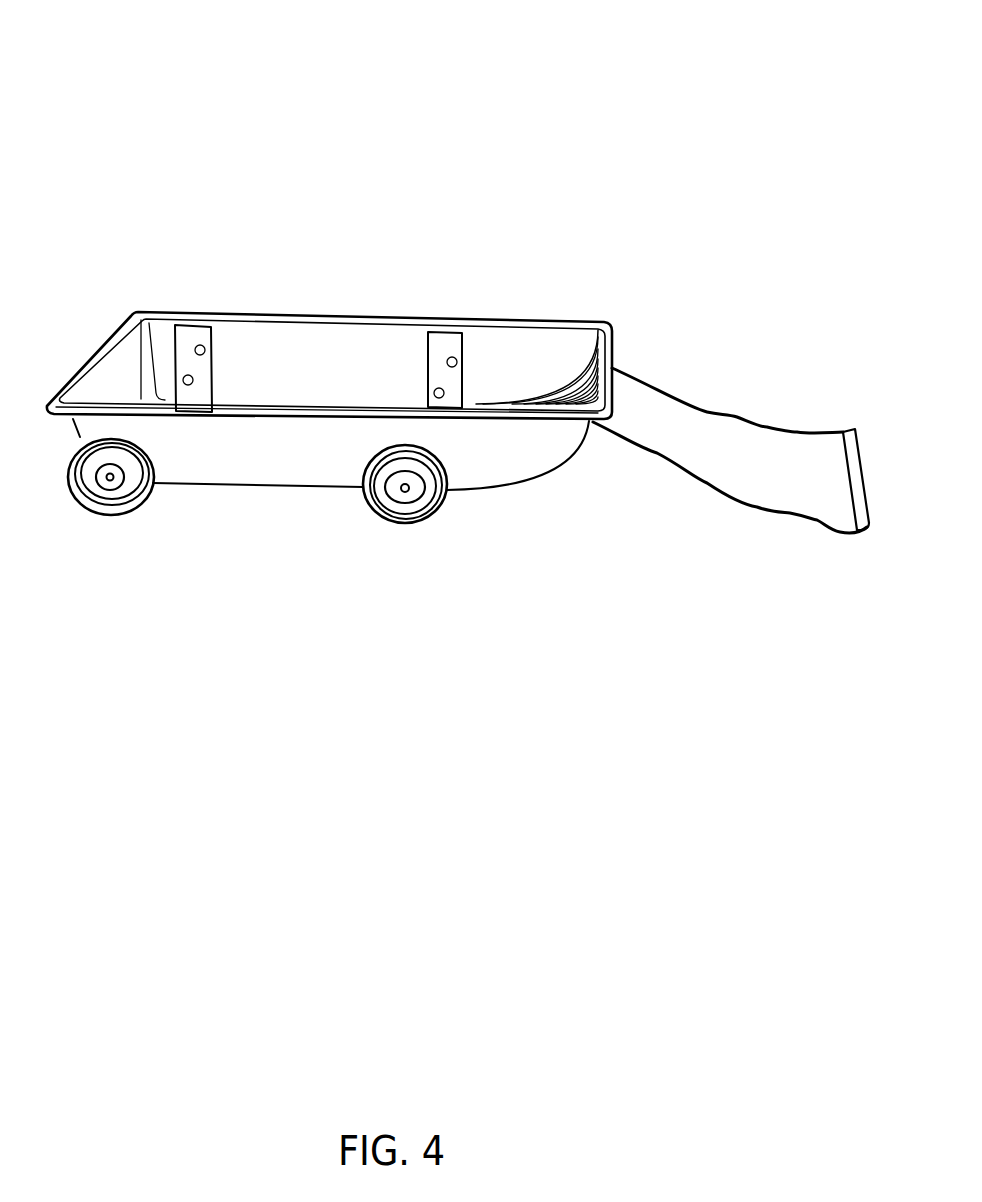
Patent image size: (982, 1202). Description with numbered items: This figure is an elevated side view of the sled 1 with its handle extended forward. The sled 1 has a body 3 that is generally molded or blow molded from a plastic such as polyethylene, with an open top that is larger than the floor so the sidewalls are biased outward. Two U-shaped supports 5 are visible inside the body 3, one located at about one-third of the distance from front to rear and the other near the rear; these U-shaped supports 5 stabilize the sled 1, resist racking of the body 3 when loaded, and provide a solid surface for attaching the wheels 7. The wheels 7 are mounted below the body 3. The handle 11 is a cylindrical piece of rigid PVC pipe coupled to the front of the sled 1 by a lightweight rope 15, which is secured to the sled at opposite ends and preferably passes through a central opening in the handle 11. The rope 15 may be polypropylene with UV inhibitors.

The sled 1 is at (349, 218).
The body 3 is at (268, 473).
The U-shaped support 5 is at (184, 337).
The wheel 7 is at (123, 495).
The handle 11 is at (845, 437).
The rope 15 is at (708, 484).